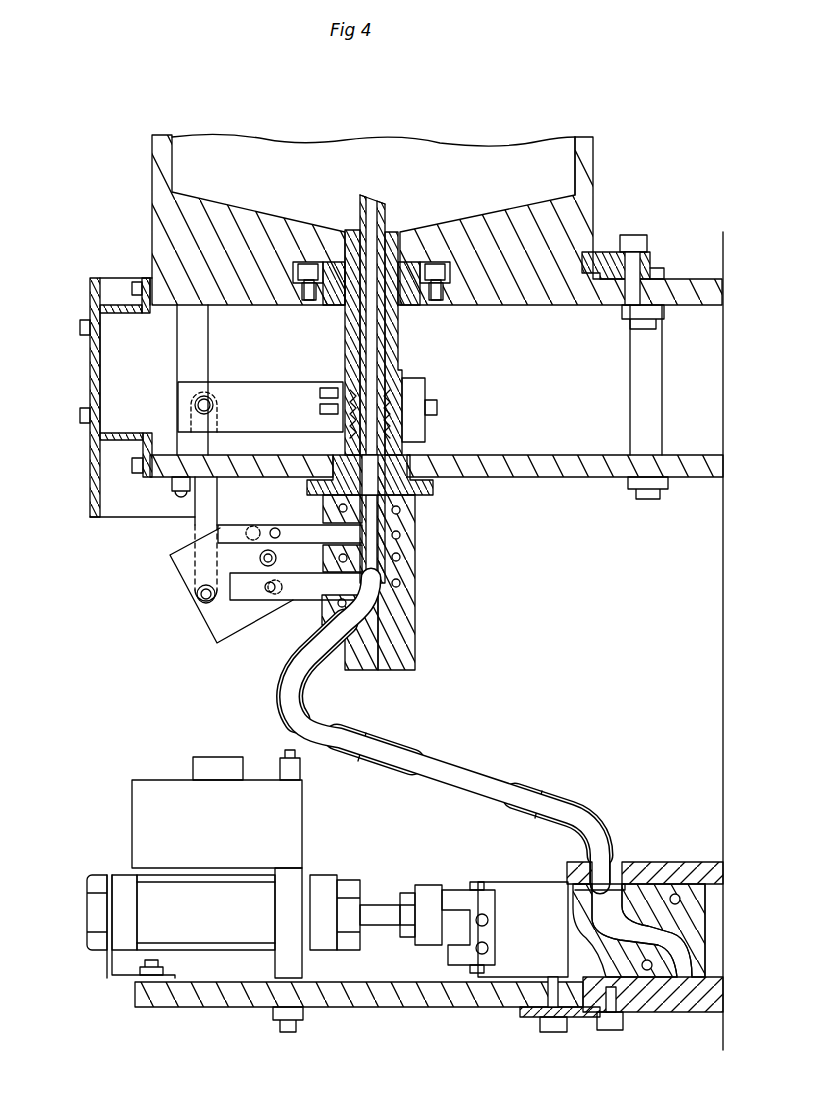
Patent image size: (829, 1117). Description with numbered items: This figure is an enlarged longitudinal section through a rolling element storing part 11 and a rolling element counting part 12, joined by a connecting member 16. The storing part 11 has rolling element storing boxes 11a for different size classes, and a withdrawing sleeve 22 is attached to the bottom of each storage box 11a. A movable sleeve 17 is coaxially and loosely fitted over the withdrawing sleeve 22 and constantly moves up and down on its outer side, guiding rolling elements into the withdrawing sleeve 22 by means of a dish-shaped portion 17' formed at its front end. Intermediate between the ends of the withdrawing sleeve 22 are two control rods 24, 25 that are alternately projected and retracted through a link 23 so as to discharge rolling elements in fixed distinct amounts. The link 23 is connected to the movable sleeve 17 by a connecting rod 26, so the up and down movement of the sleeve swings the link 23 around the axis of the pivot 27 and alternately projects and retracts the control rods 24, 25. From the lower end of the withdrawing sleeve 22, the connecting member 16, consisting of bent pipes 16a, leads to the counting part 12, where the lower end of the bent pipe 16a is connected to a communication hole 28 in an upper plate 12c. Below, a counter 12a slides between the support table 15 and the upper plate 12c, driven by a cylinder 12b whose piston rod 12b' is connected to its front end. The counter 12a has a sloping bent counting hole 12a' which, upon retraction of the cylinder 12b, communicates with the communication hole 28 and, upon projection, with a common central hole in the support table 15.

The rolling element storing part 11 is at (126, 152).
The rolling element storing box 11a is at (594, 151).
The dish-shaped portion 17' is at (348, 386).
The movable sleeve 17 is at (355, 342).
The withdrawing sleeve 22 is at (380, 347).
The connecting rod 26 is at (250, 385).
The control rod 24 is at (345, 537).
The control rod 25 is at (360, 588).
The pivot 27 is at (278, 558).
The link 23 is at (222, 633).
The connecting member 16 is at (478, 755).
The bent pipe 16a is at (285, 686).
The communication hole 28 is at (602, 872).
The upper plate 12c is at (694, 868).
The rolling element counting part 12 is at (73, 858).
The cylinder 12b is at (223, 912).
The piston rod 12b' is at (427, 917).
The counter 12a is at (523, 915).
The counting hole 12a' is at (615, 930).
The support table 15 is at (211, 997).